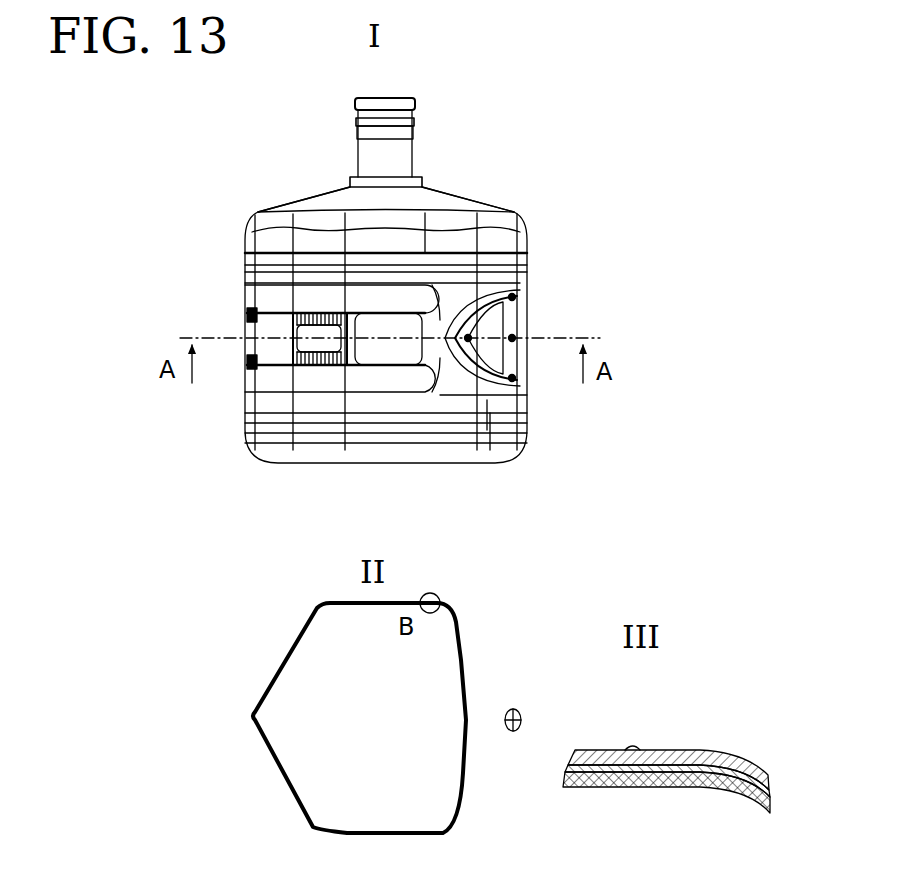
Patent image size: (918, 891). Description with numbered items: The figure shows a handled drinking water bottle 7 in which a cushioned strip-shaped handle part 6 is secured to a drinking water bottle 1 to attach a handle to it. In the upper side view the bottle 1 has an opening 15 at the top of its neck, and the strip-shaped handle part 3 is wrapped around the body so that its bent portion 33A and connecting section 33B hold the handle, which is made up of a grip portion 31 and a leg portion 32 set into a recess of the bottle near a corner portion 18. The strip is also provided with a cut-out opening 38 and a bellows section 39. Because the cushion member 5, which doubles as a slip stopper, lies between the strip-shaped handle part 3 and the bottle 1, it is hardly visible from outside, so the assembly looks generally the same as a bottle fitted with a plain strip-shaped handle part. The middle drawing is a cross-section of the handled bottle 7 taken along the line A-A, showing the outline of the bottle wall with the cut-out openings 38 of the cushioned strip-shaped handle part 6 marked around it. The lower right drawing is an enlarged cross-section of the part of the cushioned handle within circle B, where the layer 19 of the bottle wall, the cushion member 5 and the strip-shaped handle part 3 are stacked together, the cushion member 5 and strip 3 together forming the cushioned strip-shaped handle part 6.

The drinking water bottle 1 is at (540, 220).
The opening 15 is at (388, 96).
The handled drinking water bottle 7 is at (276, 188).
The bent portion 33A is at (520, 273).
The leg portion 32 is at (487, 430).
The connecting section of strip to handle 33B is at (457, 395).
The cushioned strip-shaped handle part 6 is at (260, 332).
The cut-out opening 38 is at (308, 345).
The bellows section 39 is at (332, 365).
The corner portion 18 is at (517, 300).
The grip portion 31 is at (515, 322).
The strip-shaped handle part 3 is at (667, 762).
The cushion member which doubles as slip stopper 5 is at (648, 770).
The inner layer 19 is at (588, 781).